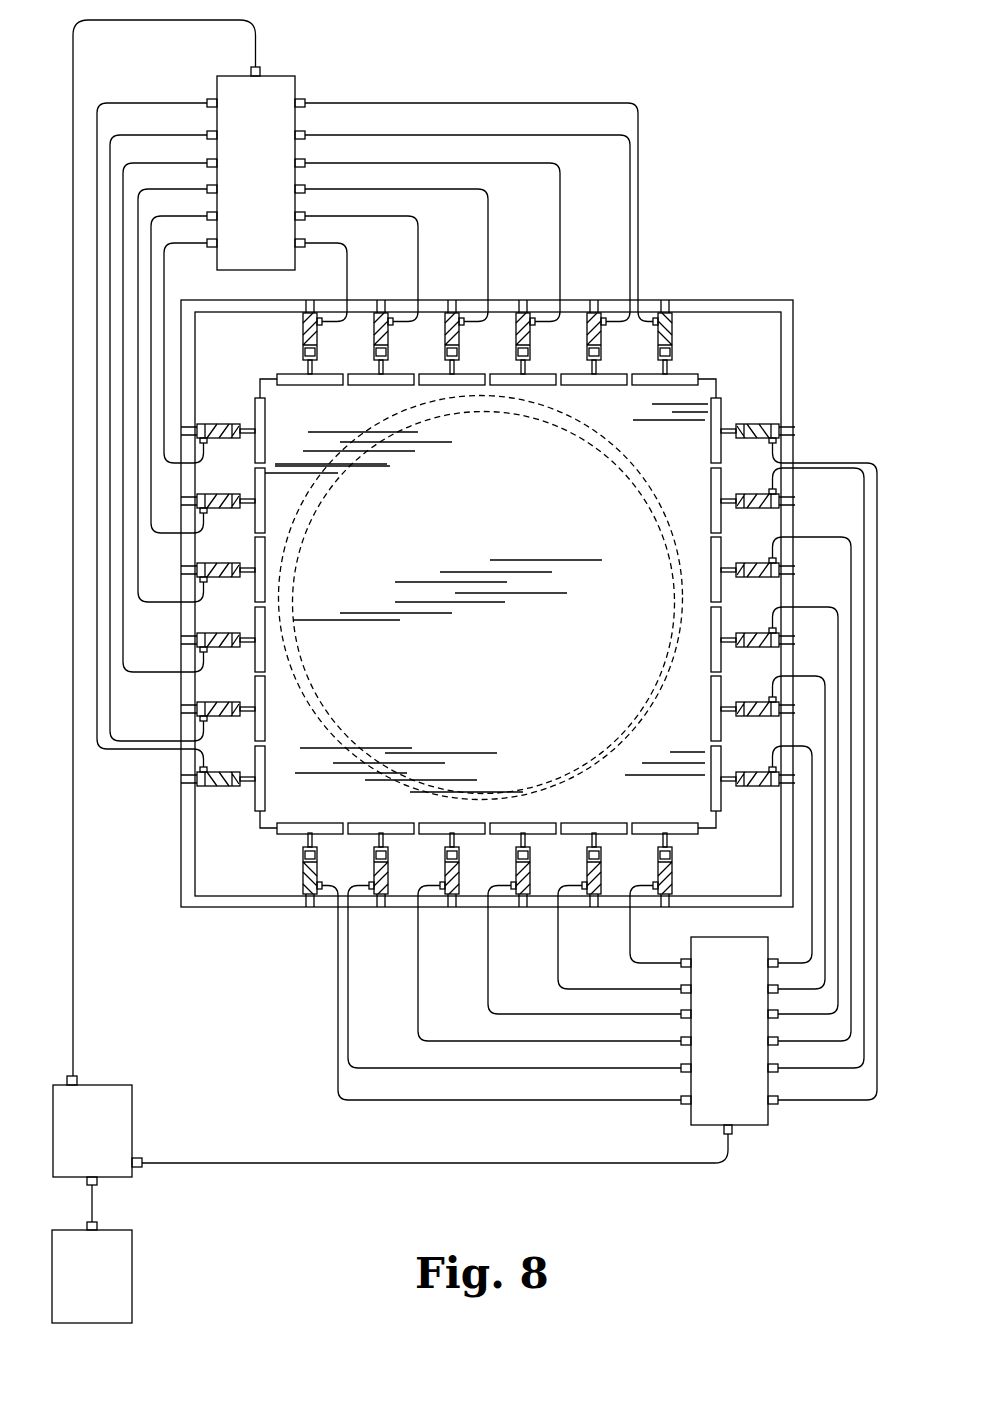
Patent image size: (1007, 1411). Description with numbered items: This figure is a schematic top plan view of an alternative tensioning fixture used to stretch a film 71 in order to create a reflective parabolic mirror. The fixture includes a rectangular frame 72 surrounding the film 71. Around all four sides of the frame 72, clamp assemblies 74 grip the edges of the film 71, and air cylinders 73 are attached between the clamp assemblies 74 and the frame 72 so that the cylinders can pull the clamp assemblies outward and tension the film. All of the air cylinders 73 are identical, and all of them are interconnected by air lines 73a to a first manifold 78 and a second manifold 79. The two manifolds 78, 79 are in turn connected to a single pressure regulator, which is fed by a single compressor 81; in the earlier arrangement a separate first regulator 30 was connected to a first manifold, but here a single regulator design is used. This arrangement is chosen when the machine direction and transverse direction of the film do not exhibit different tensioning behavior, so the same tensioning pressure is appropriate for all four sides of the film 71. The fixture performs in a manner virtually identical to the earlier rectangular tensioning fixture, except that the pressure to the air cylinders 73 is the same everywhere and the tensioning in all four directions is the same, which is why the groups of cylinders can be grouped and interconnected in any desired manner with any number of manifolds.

The first regulator 30 is at (122, 1108).
The film 71 is at (556, 681).
The rectangular frame 72 is at (233, 903).
The air cylinders 73 is at (673, 328).
The air lines 73a is at (832, 462).
The clamp assemblies 74 is at (698, 379).
The first manifold 78 is at (733, 952).
The second manifold 79 is at (243, 131).
The compressor 81 is at (122, 1295).